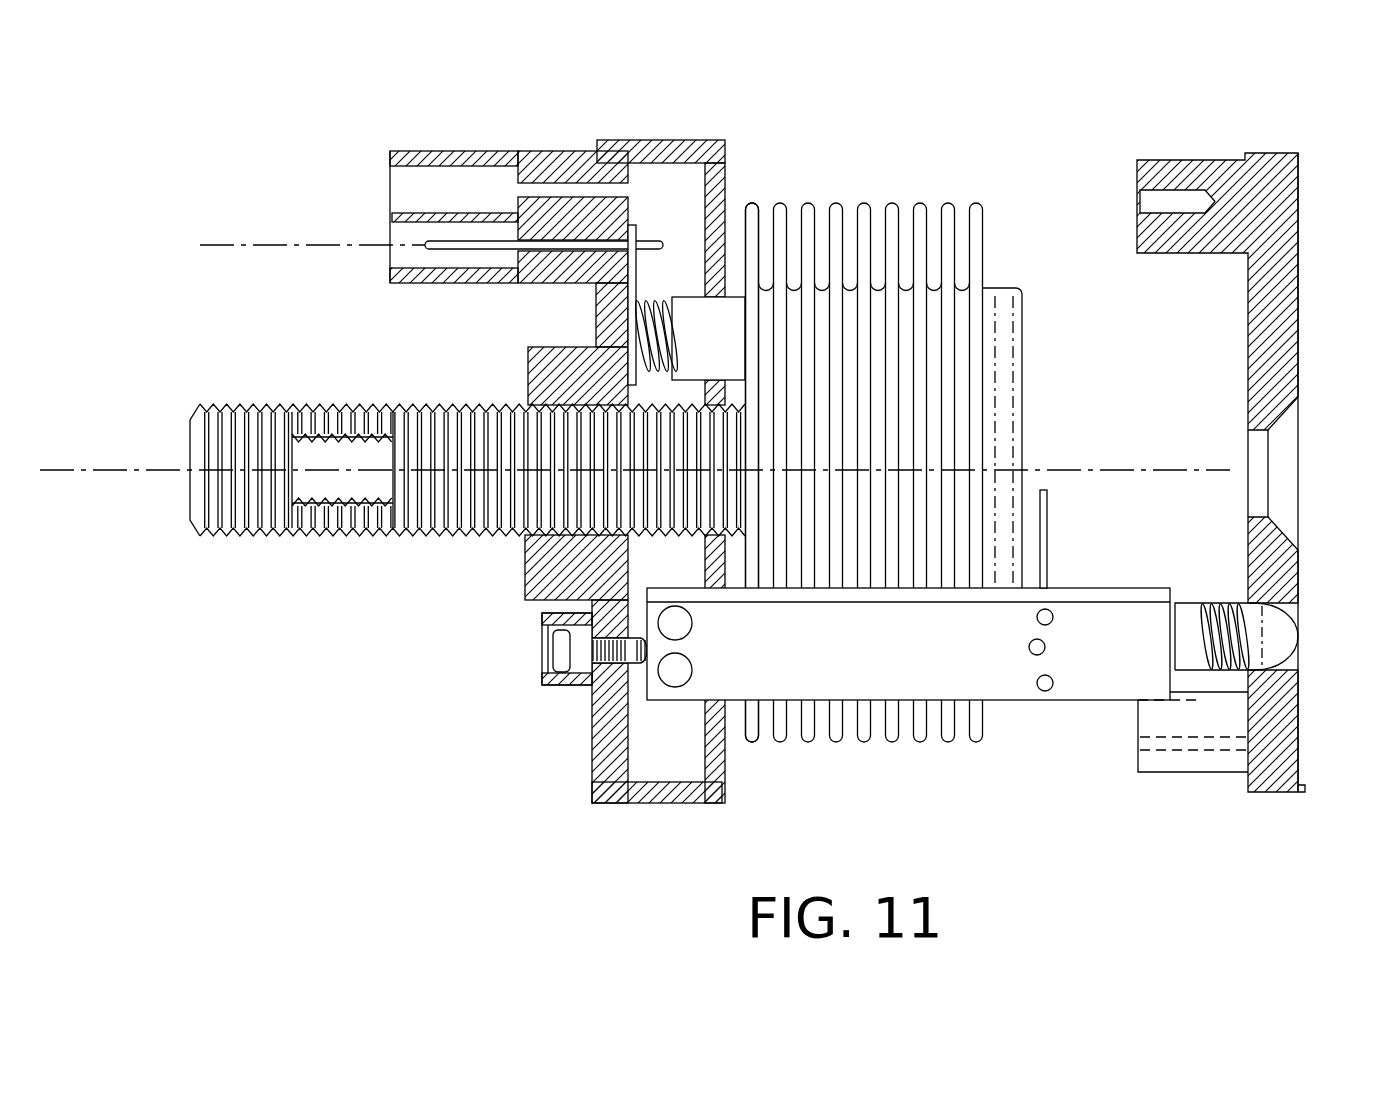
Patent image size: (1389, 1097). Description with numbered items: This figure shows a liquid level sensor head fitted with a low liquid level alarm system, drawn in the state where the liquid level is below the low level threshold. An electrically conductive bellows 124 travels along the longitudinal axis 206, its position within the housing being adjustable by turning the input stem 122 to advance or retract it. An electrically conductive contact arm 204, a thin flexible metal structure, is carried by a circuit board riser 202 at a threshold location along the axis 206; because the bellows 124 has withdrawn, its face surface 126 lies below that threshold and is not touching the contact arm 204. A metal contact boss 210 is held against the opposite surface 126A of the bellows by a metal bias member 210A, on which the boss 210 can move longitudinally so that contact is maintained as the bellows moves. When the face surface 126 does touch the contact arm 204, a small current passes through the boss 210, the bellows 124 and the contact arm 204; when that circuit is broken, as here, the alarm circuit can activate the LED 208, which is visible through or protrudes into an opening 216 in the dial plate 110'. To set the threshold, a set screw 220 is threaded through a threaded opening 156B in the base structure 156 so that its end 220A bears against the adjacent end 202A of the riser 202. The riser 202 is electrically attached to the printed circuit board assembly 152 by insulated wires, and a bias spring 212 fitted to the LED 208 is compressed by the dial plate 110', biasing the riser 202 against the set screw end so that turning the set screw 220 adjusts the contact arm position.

The dial plate 110' is at (1218, 439).
The input stem 122 is at (418, 403).
The bellows 124 is at (997, 287).
The bellows face surface 126 is at (1022, 367).
The opposite surface of the bellows 126A is at (742, 203).
The printed circuit board assembly 152 is at (724, 168).
The base structure 156 is at (530, 150).
The threaded opening 156B is at (592, 770).
The circuit board riser 202 is at (1045, 703).
The end of the riser structure 202A is at (658, 692).
The contact arm 204 is at (1048, 517).
The longitudinal axis 206 is at (1115, 470).
The LED 208 is at (1298, 672).
The contact boss 210 is at (697, 333).
The bias member 210A is at (653, 297).
The bias spring 212 is at (1220, 670).
The opening 216 is at (1298, 627).
The set screw 220 is at (573, 667).
The end of the set screw 220A is at (652, 650).